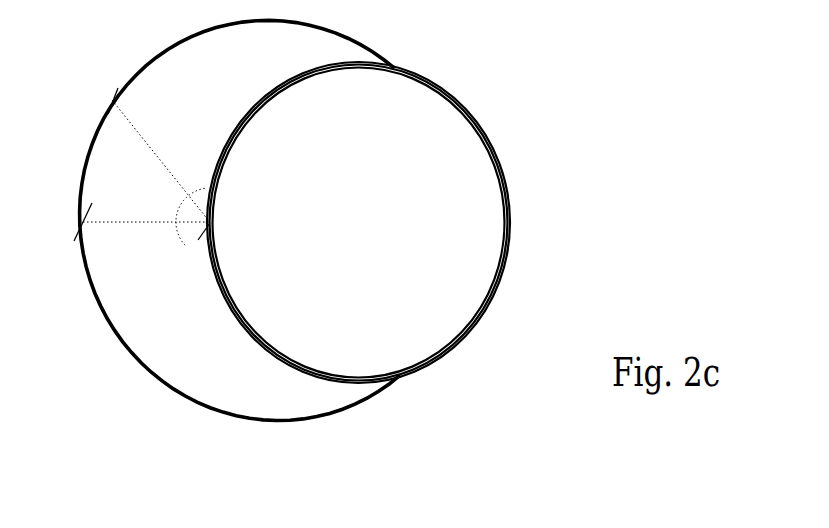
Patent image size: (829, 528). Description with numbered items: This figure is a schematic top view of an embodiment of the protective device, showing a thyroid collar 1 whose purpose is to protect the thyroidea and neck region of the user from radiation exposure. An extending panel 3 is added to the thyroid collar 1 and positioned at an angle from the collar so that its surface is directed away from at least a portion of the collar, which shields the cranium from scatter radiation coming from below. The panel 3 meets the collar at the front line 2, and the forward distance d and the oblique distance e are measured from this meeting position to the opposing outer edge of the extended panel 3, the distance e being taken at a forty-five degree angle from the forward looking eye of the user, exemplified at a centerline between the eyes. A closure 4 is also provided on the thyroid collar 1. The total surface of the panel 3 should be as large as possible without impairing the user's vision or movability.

The thyroid collar 1 is at (415, 403).
The front line 2 is at (298, 370).
The extending panel 3 is at (175, 337).
The closure 4 is at (510, 223).